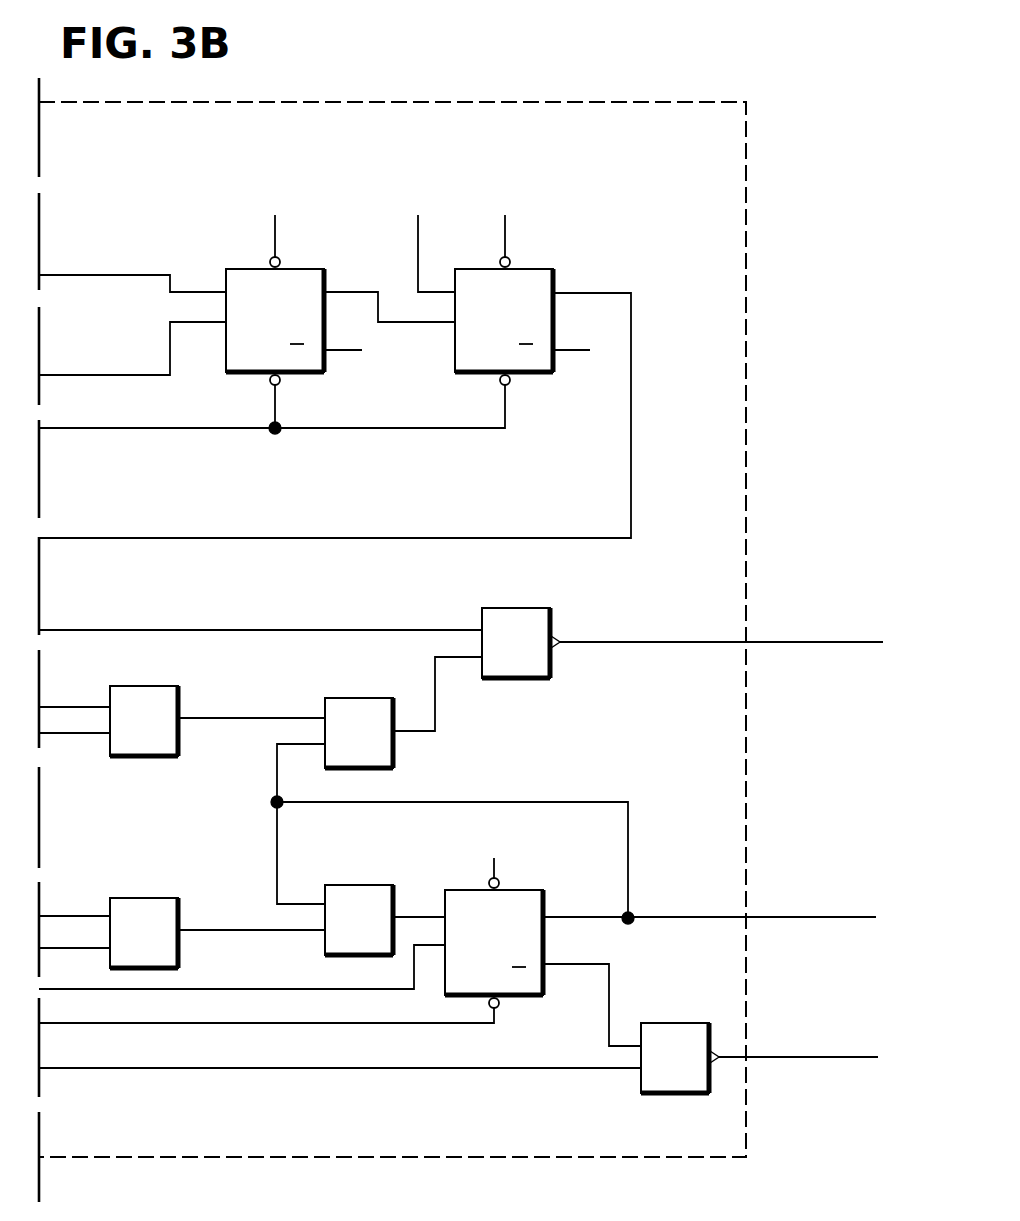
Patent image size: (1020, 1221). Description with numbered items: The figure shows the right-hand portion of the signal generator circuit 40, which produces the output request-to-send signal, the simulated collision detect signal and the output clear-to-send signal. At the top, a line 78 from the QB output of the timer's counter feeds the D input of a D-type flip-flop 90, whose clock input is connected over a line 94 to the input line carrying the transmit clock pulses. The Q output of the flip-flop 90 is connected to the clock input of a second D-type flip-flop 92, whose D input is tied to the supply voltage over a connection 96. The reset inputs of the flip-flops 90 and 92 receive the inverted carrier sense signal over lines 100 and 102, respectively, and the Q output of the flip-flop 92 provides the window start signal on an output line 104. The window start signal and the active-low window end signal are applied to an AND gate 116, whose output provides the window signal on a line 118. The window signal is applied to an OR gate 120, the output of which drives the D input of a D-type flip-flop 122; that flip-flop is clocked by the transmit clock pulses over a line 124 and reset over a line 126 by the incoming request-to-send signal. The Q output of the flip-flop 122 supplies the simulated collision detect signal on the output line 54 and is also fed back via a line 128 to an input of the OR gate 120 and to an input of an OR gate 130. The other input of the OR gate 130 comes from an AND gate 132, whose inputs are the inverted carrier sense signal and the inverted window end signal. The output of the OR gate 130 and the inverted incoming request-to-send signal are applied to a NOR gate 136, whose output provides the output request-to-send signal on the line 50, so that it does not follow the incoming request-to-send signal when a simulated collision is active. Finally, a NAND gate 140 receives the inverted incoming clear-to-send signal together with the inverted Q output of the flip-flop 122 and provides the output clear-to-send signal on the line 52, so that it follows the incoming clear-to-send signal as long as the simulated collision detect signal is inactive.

The signal generator circuit 40 is at (746, 210).
The line 78 is at (106, 275).
The line 94 is at (118, 375).
The D-type flip-flop 90 is at (296, 269).
The D-type flip-flop 92 is at (530, 269).
The Vcc input line 96 is at (416, 280).
The line 100 is at (278, 411).
The line 102 is at (418, 428).
The output line 104 is at (631, 318).
The NOR gate 136 is at (545, 608).
The line 50 is at (765, 643).
The AND gate 132 is at (140, 758).
The OR gate 130 is at (325, 700).
The line 128 is at (548, 802).
The AND gate 116 is at (140, 898).
The line 118 is at (222, 932).
The OR gate 120 is at (355, 885).
The D-type flip-flop 122 is at (530, 890).
The line 124 is at (288, 990).
The line 126 is at (378, 1024).
The line 54 is at (765, 918).
The NAND gate 140 is at (656, 1094).
The line 52 is at (765, 1058).